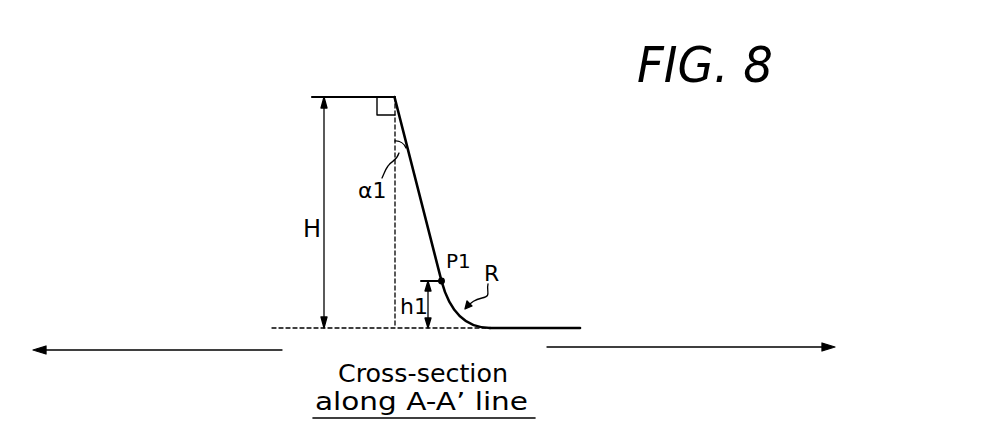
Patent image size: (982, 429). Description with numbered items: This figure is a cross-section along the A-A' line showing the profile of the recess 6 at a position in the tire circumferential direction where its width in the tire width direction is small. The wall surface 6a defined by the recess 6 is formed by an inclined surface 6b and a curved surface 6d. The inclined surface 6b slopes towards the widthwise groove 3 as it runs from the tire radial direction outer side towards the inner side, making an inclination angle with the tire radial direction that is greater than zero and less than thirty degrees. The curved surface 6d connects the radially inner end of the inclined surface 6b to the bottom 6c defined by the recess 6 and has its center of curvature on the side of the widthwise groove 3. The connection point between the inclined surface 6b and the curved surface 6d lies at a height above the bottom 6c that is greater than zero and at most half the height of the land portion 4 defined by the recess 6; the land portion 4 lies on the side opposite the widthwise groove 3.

The recess 6 is at (521, 176).
The wall surface 6a is at (602, 207).
The inclined surface 6b is at (434, 252).
The curved surface 6d is at (488, 327).
The bottom 6c is at (557, 328).
The land portion 4 is at (157, 361).
The widthwise groove 3 is at (691, 359).